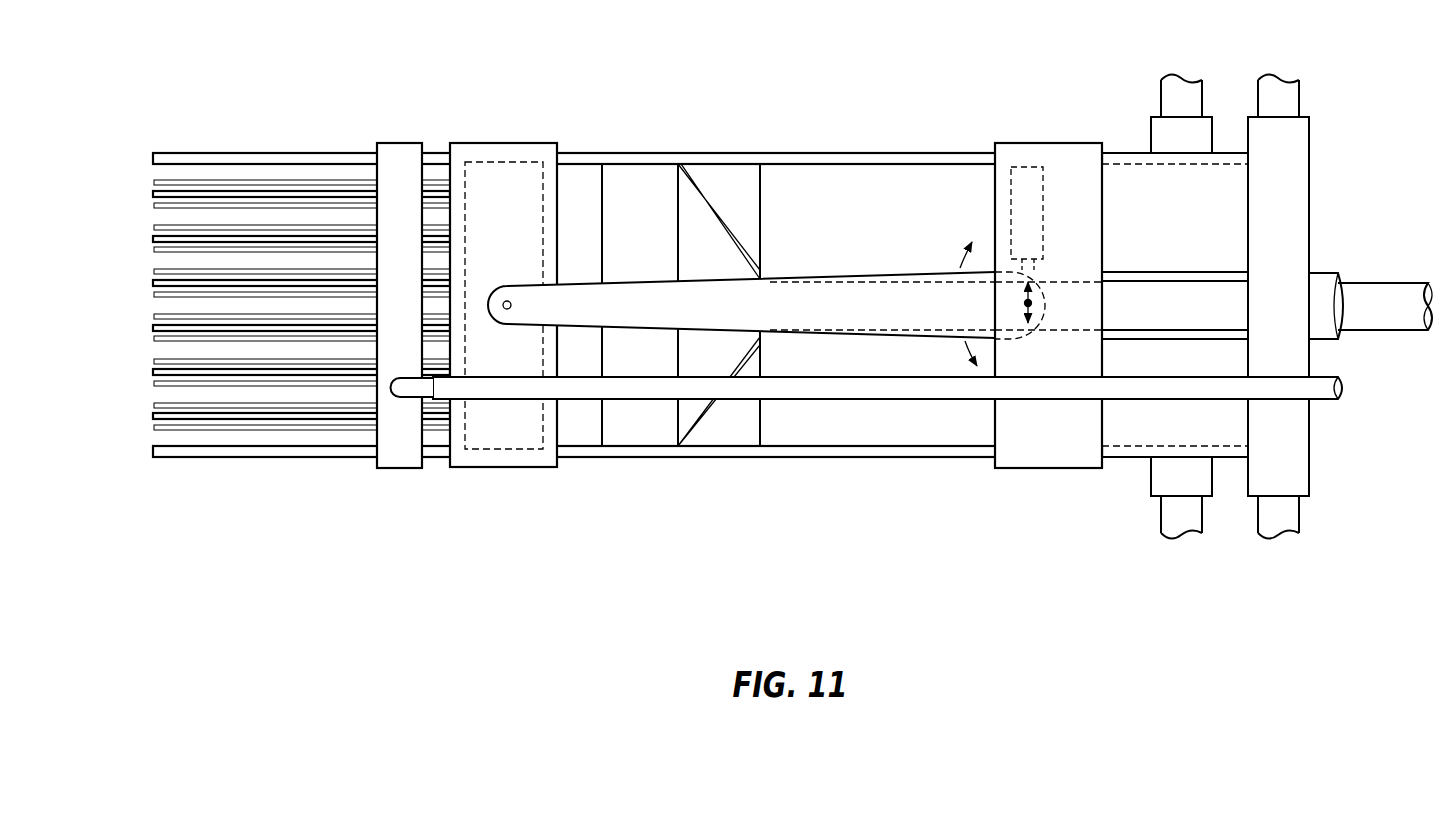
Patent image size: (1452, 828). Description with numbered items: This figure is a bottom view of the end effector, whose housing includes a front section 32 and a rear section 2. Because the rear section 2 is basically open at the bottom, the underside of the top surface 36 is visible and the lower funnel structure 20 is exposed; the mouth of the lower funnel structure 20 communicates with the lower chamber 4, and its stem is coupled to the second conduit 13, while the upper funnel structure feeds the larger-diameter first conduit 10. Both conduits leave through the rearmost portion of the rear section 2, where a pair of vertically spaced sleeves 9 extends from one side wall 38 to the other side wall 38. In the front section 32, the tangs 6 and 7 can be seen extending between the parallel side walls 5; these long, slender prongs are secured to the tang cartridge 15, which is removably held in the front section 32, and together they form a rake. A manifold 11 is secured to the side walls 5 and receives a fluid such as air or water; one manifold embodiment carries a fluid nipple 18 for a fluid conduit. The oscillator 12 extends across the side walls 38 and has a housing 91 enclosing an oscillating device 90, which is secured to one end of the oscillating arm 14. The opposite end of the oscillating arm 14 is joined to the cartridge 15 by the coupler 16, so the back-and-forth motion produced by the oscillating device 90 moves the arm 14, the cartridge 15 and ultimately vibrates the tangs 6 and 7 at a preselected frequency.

The rear section 2 is at (776, 313).
The lower chamber 4 is at (633, 183).
The side walls 5 is at (201, 154).
The tangs 6 is at (153, 194).
The tangs 7 is at (153, 272).
The sleeves 9 is at (1313, 460).
The first conduit 10 is at (1325, 270).
The manifold 11 is at (402, 140).
The oscillator 12 is at (1058, 308).
The second conduit 13 is at (1392, 283).
The oscillating arm 14 is at (855, 322).
The tang cartridge 15 is at (505, 140).
The coupler 16 is at (507, 300).
The fluid nipple 18 is at (403, 385).
The lower funnel structure 20 is at (705, 198).
The front section 32 is at (278, 237).
The top surface 36 is at (853, 190).
The side walls 38 is at (920, 153).
The oscillating device 90 is at (1030, 167).
The housing 91 is at (1083, 458).